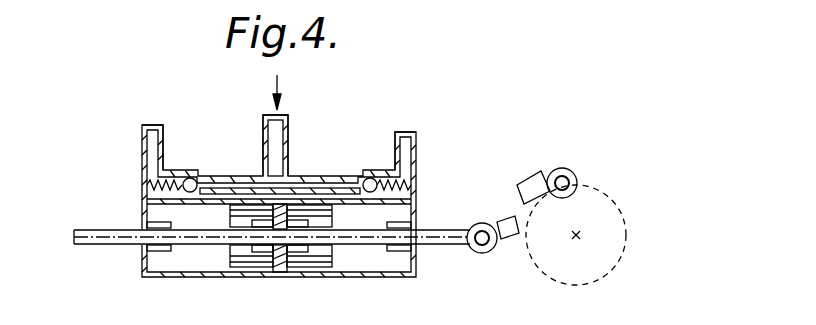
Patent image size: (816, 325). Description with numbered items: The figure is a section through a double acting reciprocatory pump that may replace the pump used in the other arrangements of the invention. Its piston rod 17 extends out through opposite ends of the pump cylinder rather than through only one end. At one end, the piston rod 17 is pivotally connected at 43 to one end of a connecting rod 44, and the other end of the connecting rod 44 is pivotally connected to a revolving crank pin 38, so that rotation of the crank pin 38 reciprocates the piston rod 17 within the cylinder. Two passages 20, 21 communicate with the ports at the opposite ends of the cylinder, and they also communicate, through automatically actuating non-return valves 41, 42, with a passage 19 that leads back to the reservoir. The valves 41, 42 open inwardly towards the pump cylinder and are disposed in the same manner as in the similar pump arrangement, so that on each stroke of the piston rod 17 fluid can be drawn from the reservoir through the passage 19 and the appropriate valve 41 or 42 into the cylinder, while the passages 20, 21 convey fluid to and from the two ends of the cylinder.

The piston rod 17 is at (433, 237).
The passage 19 is at (277, 143).
The passage 20 is at (406, 148).
The passage 21 is at (152, 147).
The crank pin 38 is at (563, 181).
The non-return valve 41 is at (382, 182).
The non-return valve 42 is at (170, 182).
The pivotal connection 43 is at (482, 237).
The connecting rod 44 is at (507, 215).